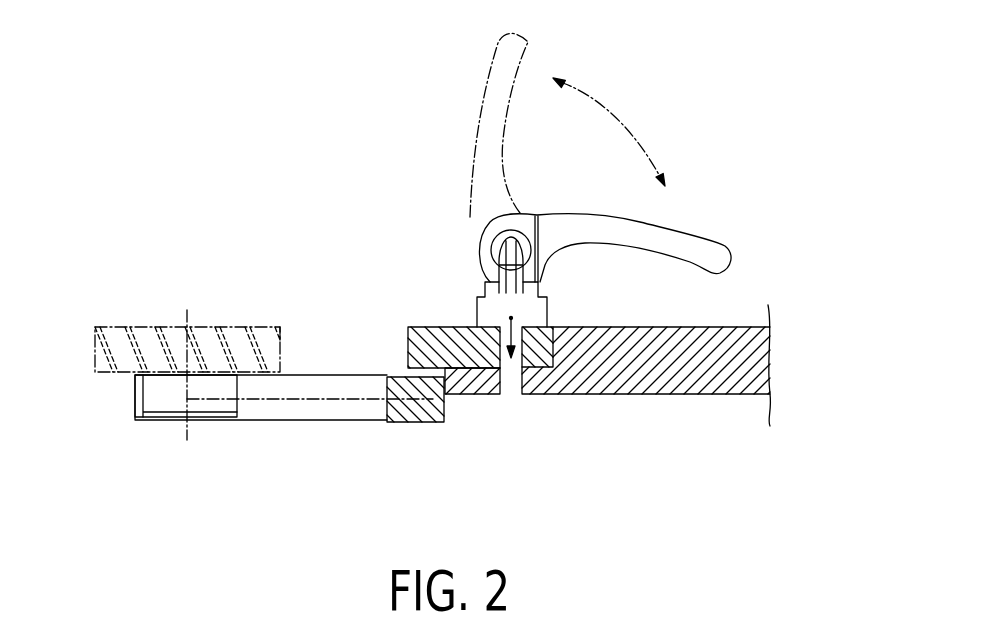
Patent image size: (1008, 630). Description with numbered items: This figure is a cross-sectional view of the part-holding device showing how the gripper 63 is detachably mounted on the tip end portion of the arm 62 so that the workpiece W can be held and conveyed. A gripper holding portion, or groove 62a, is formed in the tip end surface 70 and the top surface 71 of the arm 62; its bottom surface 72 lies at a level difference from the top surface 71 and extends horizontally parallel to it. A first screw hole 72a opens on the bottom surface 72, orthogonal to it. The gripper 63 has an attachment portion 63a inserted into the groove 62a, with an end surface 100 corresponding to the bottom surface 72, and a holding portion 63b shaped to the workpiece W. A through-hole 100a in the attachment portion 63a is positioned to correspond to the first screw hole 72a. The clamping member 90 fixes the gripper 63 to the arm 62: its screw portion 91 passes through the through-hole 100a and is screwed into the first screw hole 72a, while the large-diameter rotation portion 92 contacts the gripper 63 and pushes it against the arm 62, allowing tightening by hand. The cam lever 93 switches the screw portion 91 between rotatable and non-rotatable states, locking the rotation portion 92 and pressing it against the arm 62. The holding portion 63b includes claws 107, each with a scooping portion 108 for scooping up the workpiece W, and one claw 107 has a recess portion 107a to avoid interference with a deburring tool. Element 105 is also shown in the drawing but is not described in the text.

The workpiece W is at (117, 327).
The arm 62 is at (612, 351).
The gripper holding portion (groove) 62a is at (555, 360).
The gripper 63 is at (305, 395).
The attachment portion 63a is at (435, 325).
The holding portion 63b is at (327, 421).
The tip end surface 70 is at (423, 420).
The top surface 71 is at (750, 327).
The bottom surface 72 is at (478, 388).
The first screw hole 72a is at (509, 378).
The clamping member 90 is at (593, 169).
The screw portion 91 is at (465, 327).
The rotation portion 92 is at (547, 302).
The cam lever 93 is at (493, 52).
The end surface 100 is at (615, 326).
The through-hole 100a is at (480, 295).
The positioning block 105 is at (407, 326).
The claw 107 is at (250, 421).
The recess portion 107a is at (347, 402).
The scooping portion 108 is at (167, 417).